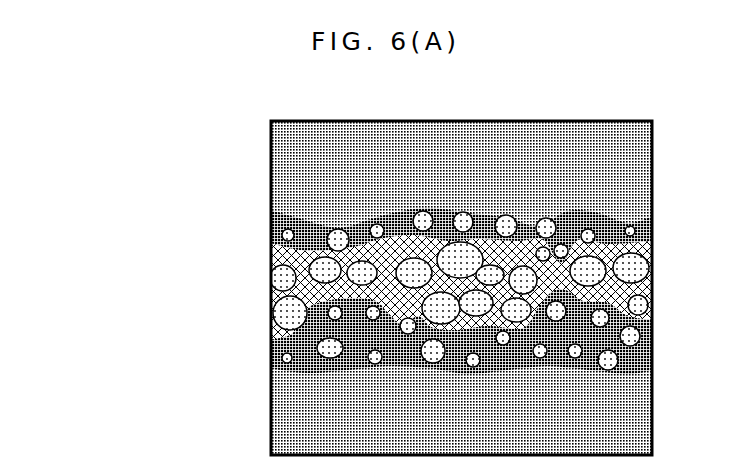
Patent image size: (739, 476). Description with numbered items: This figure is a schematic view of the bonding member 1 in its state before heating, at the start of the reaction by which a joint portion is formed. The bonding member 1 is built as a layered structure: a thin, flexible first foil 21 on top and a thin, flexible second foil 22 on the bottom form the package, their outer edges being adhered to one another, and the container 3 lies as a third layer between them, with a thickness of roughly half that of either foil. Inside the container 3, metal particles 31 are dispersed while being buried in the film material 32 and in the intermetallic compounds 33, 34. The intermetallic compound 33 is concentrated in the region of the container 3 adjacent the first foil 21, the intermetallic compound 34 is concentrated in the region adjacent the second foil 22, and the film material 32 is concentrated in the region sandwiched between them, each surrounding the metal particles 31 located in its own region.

The bonding member 1 is at (152, 226).
The first foil 21 is at (235, 139).
The second foil 22 is at (235, 421).
The container 3 is at (252, 199).
The metal particles 31 is at (644, 257).
The film material 32 is at (644, 292).
The intermetallic compound 33 is at (558, 203).
The intermetallic compound 34 is at (586, 345).